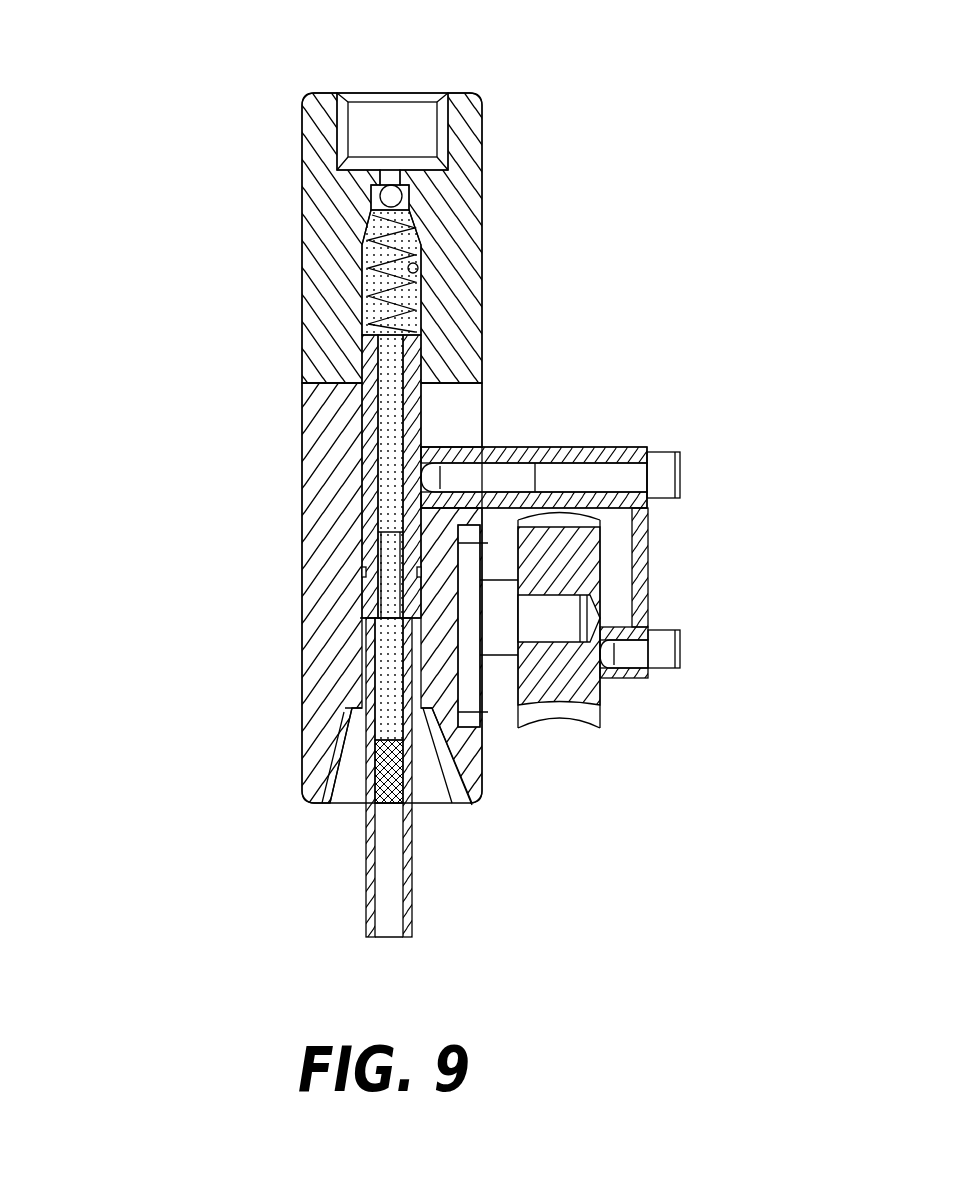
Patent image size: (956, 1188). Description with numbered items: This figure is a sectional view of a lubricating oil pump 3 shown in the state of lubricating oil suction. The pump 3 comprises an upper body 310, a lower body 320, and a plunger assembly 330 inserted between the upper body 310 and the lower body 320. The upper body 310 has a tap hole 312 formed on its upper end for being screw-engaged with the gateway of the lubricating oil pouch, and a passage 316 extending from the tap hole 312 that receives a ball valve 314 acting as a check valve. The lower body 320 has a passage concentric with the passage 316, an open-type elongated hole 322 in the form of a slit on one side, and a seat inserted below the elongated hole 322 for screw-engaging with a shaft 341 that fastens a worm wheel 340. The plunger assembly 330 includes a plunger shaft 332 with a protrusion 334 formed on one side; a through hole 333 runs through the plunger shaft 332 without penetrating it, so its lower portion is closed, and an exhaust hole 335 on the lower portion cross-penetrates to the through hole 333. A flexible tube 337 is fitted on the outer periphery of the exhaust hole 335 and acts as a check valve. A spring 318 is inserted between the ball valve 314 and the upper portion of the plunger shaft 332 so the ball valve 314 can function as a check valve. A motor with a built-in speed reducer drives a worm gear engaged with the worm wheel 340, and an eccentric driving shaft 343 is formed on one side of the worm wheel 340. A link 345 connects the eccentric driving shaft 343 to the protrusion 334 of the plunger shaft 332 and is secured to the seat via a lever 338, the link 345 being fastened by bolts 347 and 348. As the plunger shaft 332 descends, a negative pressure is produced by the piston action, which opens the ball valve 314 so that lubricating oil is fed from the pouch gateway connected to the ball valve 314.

The pump 3 is at (500, 141).
The upper body 310 is at (333, 340).
The tap hole 312 is at (360, 110).
The ball valve 314 is at (392, 196).
The passage 316 is at (413, 268).
The spring 318 is at (372, 320).
The lower body 320 is at (302, 560).
The elongated hole 322 is at (482, 383).
The plunger assembly 330 is at (430, 803).
The plunger shaft 332 is at (302, 620).
The through hole 333 is at (390, 425).
The protrusion 334 is at (482, 423).
The exhaust hole 335 is at (420, 774).
The flexible tube 337 is at (370, 863).
The lever 338 is at (598, 447).
The worm wheel 340 is at (580, 572).
The shaft 341 is at (495, 647).
The eccentric driving shaft 343 is at (613, 680).
The link 345 is at (648, 548).
The bolt 347 is at (680, 470).
The bolt 348 is at (681, 648).